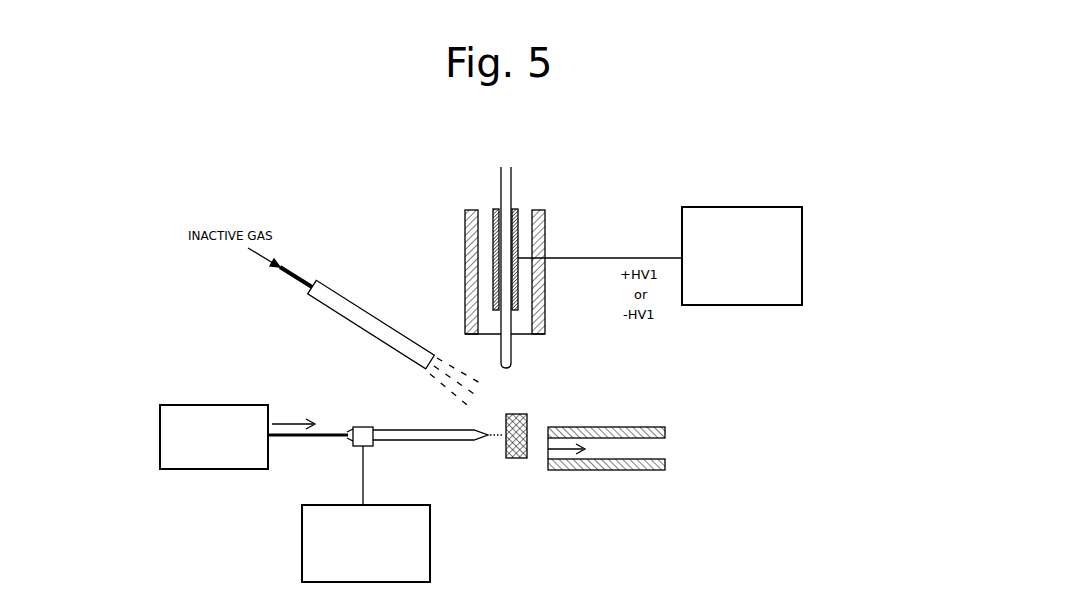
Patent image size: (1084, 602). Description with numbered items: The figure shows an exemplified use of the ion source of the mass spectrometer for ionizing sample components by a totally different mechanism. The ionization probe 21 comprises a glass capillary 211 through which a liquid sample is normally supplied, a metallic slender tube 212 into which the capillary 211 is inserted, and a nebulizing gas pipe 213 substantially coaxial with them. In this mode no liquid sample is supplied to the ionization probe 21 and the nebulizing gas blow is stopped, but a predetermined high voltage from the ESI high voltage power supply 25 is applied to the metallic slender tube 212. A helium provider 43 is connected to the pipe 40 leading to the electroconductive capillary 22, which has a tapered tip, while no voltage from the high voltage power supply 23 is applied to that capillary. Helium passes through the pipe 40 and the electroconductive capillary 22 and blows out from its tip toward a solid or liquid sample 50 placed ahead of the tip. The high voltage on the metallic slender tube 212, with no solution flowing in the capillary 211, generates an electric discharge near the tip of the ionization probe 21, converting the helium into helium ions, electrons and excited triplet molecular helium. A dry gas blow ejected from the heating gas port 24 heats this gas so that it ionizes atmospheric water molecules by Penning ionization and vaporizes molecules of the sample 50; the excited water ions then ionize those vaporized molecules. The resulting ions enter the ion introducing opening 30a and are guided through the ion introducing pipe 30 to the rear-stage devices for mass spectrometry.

The ionization probe 21 is at (384, 172).
The nebulizing gas pipe 213 is at (465, 220).
The metallic slender tube 212 is at (493, 274).
The capillary 211 is at (497, 319).
The heating gas port 24 is at (340, 292).
The ESI high voltage power supply 25 is at (803, 238).
The helium provider 43 is at (207, 404).
The pipe 40 is at (333, 430).
The electroconductive capillary 22 is at (408, 429).
The high voltage power supply 23 is at (302, 540).
The sample 50 is at (528, 418).
The ion introducing pipe 30 is at (615, 427).
The ion introducing opening 30a is at (546, 461).